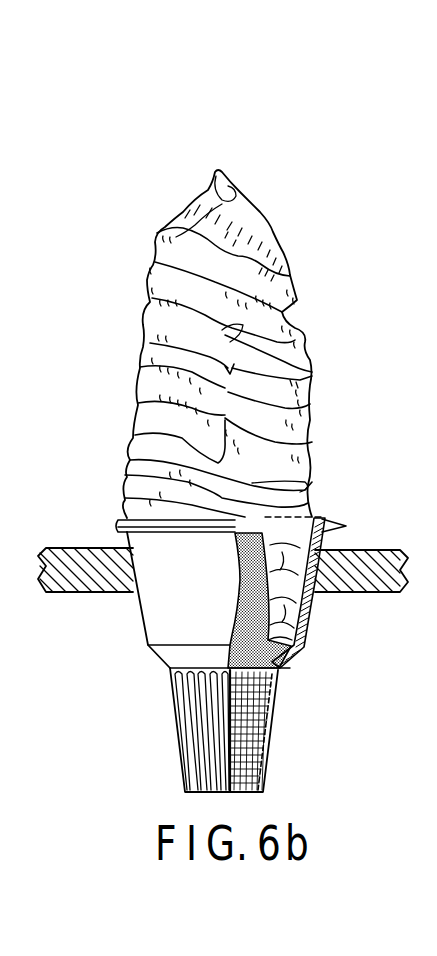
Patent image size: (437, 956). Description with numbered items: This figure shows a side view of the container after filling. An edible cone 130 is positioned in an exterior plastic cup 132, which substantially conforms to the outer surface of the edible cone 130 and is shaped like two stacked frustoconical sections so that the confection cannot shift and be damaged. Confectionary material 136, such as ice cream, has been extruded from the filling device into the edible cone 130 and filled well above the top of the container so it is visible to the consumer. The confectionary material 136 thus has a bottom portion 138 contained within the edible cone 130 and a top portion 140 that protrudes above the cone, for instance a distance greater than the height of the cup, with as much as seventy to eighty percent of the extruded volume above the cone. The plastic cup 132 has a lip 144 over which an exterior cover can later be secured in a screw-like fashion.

The confectionary material 136 is at (306, 301).
The top portion 140 is at (312, 428).
The lip 144 is at (334, 527).
The bottom portion 138 is at (300, 603).
The edible cone 130 is at (310, 640).
The exterior plastic cup 132 is at (200, 682).